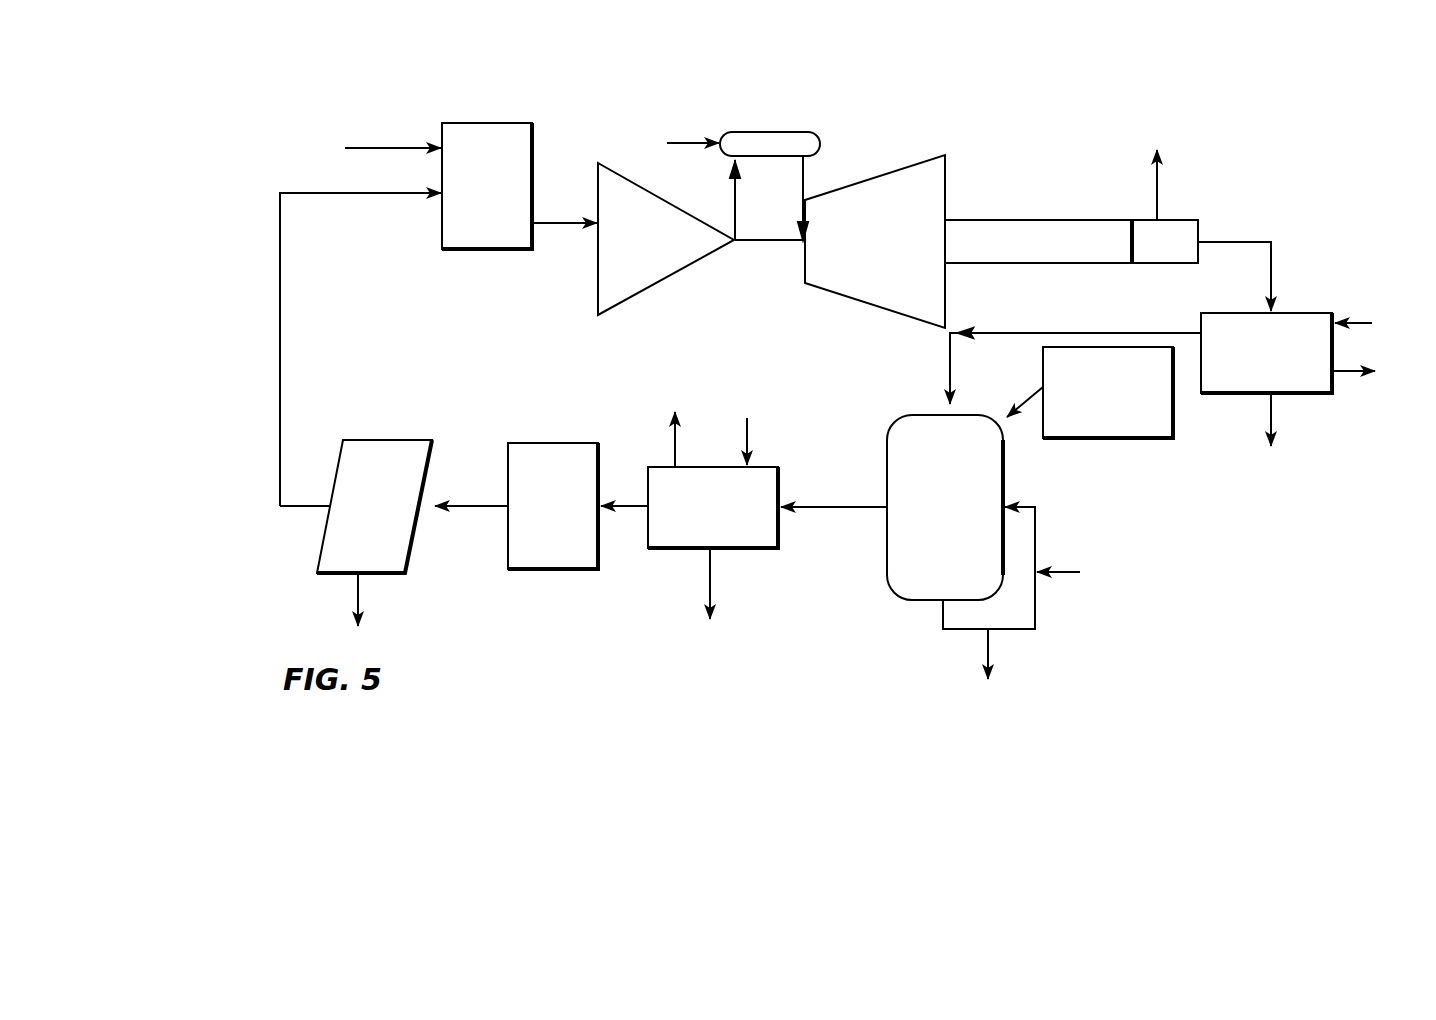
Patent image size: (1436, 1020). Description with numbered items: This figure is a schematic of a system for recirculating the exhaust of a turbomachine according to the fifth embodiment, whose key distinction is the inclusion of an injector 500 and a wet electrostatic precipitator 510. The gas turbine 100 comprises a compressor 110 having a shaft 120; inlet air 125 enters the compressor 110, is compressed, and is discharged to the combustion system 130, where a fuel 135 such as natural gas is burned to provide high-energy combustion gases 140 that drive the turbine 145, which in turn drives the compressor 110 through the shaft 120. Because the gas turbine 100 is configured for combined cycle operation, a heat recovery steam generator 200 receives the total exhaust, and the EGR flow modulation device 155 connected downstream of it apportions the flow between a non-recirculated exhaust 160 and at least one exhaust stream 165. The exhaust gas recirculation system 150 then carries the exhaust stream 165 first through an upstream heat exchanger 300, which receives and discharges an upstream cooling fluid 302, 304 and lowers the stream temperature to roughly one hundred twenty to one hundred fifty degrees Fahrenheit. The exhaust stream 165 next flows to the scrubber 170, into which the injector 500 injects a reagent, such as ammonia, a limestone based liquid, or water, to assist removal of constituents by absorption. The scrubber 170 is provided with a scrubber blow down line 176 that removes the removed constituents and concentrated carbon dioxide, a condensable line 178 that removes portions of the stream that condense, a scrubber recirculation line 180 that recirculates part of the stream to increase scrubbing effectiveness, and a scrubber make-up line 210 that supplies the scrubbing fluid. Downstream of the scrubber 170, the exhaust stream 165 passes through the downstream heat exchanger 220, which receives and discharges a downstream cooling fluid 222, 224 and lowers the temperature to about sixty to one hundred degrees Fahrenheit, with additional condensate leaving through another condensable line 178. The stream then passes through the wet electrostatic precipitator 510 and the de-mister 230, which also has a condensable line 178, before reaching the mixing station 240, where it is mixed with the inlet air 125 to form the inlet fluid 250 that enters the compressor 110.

The gas turbine 100 is at (566, 128).
The compressor 110 is at (624, 251).
The shaft 120 is at (752, 244).
The inlet air 125 is at (388, 146).
The combustion system 130 is at (747, 132).
The fuel 135 is at (680, 142).
The combustion gases 140 is at (805, 181).
The turbine 145 is at (859, 251).
The exhaust gas recirculation system 150 is at (1189, 157).
The EGR flow modulation device 155 is at (1144, 251).
The non-recirculated exhaust 160 is at (1152, 200).
The exhaust stream 165 is at (280, 306).
The scrubber 170 is at (921, 511).
The scrubber blow down line 176 is at (986, 646).
The condensable line 178 is at (1269, 411).
The scrubber recirculation line 180 is at (1035, 535).
The heat recovery steam generator 200 is at (1011, 251).
The scrubber make-up line 210 is at (1085, 574).
The downstream heat exchanger 220 is at (692, 511).
The downstream cooling fluid 222 is at (750, 441).
The downstream cooling fluid 224 is at (673, 450).
The de-mister 230 is at (349, 516).
The mixing station 240 is at (466, 192).
The inlet fluid 250 is at (556, 226).
The upstream heat exchanger 300 is at (1244, 361).
The upstream cooling fluid 302 is at (1360, 324).
The upstream cooling fluid 304 is at (1342, 372).
The injector 500 is at (1087, 401).
The wet electrostatic precipitator 510 is at (532, 511).